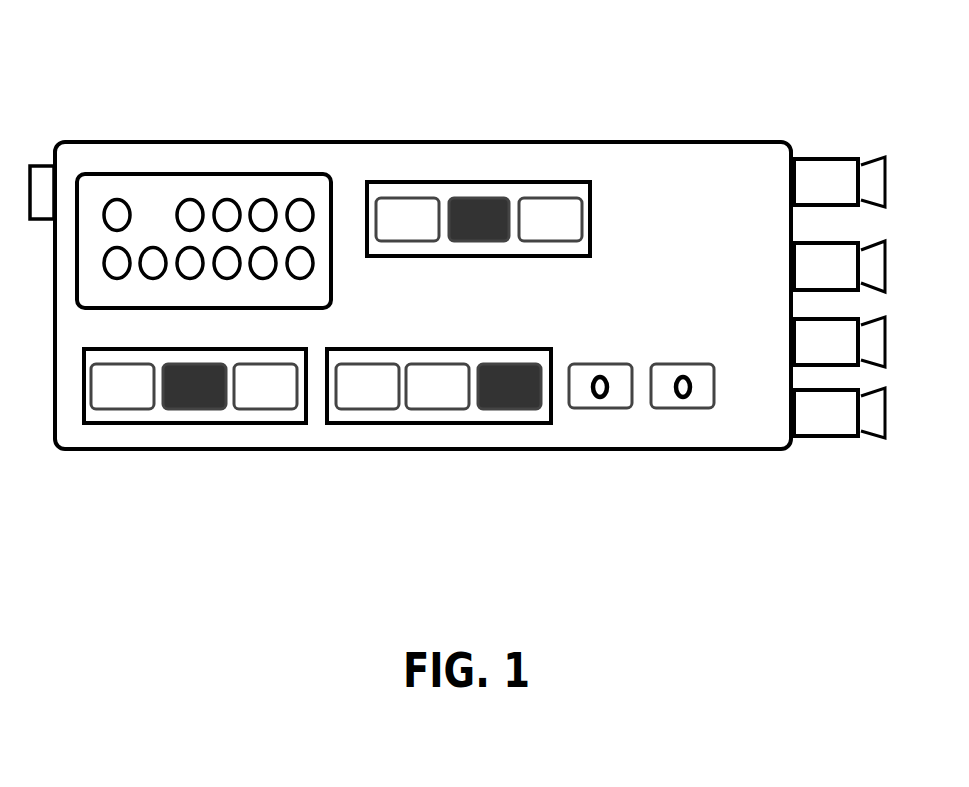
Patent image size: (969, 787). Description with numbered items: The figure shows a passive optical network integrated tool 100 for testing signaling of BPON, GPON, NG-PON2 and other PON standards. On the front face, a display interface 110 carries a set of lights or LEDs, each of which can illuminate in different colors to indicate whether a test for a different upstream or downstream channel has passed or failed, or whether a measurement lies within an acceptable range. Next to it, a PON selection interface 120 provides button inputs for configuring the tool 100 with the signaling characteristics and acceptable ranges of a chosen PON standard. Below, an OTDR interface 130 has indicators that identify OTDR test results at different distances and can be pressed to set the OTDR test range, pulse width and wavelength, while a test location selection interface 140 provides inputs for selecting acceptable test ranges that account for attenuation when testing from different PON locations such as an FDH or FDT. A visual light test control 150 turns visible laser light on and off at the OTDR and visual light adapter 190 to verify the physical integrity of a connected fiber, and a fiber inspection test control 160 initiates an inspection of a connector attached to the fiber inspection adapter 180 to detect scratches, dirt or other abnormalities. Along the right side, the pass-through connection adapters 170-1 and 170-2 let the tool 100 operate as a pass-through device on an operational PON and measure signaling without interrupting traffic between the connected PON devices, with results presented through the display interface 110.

The PON integrated tool 100 is at (411, 79).
The display interface 110 is at (230, 172).
The PON selection interface 120 is at (587, 180).
The OTDR interface 130 is at (307, 427).
The test location selection interface 140 is at (550, 427).
The visual light test control 150 is at (631, 409).
The fiber inspection test control 160 is at (707, 409).
The pass-through connection adapter 170-1 is at (800, 193).
The pass-through connection adapter 170-2 is at (800, 277).
The fiber inspection adapter 180 is at (809, 353).
The OTDR and/or visual light adapter 190 is at (809, 424).